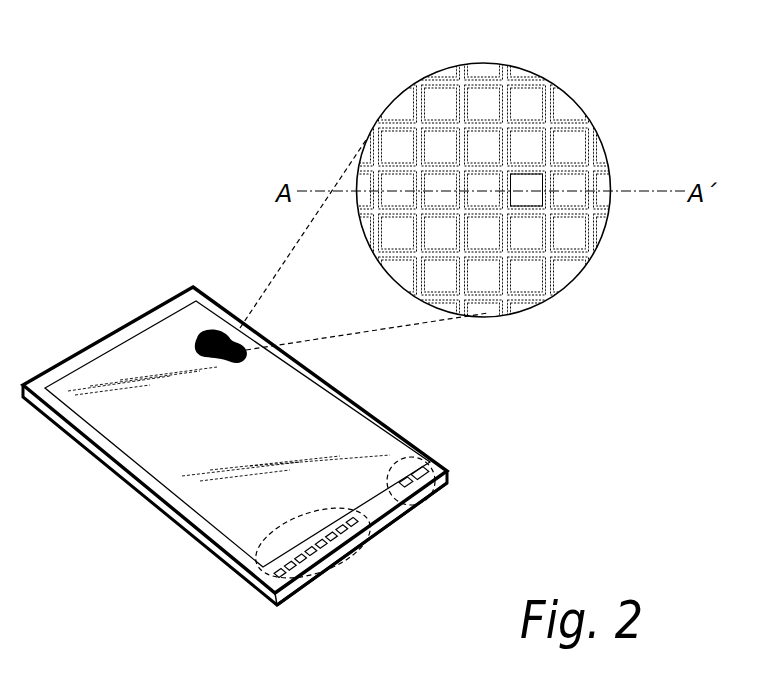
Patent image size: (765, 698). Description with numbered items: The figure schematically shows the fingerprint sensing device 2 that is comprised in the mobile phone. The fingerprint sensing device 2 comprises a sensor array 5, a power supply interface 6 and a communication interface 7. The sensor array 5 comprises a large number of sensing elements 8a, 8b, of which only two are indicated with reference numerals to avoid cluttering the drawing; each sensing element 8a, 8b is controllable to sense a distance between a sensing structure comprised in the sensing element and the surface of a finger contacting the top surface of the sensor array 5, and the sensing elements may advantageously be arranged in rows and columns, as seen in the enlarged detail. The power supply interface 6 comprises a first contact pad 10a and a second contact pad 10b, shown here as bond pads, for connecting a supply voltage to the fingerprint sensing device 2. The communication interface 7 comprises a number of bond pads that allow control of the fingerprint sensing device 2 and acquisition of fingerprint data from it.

The fingerprint sensing device 2 is at (206, 224).
The sensor array 5 is at (343, 424).
The power supply interface 6 is at (448, 500).
The communication interface 7 is at (334, 585).
The sensing element 8a is at (527, 193).
The sensing element 8b is at (483, 185).
The first contact pad 10a is at (404, 488).
The second contact pad 10b is at (424, 468).